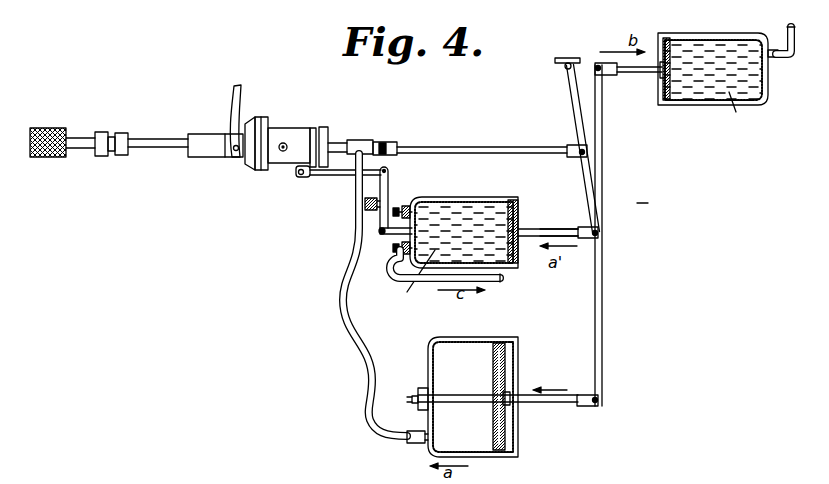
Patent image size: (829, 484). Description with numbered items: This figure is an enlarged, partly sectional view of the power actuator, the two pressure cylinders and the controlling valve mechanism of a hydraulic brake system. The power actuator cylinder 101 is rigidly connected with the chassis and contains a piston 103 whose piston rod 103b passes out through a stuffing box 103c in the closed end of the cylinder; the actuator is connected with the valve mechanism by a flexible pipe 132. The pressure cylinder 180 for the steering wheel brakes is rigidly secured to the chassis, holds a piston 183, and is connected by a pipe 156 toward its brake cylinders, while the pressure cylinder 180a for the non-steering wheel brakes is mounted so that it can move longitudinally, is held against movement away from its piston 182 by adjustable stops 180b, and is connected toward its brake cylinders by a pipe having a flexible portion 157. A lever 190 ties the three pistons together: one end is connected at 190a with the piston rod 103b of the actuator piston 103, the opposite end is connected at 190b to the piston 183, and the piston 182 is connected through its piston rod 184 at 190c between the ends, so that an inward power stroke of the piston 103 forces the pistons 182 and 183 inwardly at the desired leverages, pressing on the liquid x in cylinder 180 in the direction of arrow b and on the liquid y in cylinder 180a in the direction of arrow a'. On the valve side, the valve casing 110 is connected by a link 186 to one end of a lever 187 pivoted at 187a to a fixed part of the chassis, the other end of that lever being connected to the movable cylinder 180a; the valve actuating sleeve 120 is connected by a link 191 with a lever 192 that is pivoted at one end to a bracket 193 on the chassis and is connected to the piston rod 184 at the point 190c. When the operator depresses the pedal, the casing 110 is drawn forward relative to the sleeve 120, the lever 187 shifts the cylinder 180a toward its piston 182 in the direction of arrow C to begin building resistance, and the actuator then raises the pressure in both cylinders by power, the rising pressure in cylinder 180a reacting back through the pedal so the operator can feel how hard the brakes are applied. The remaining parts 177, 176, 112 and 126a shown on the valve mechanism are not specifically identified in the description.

The hand knob 177 is at (81, 151).
The shaft coupling 176 is at (155, 152).
The valve casing 110 is at (243, 158).
The port 112 is at (283, 152).
The operating lever 126a is at (242, 90).
The valve actuating sleeve 120 is at (357, 138).
The link 186 is at (318, 173).
The lever 187 is at (391, 181).
The pivot 187a is at (392, 212).
The adjustable stops 180b is at (392, 248).
The pressure cylinder for the non-steering wheel brake mechanisms 180a is at (481, 201).
The piston 182 is at (516, 219).
The piston rod 184 is at (562, 231).
The connection point 190c is at (600, 234).
The lever 190 is at (603, 293).
The connection point 190b is at (598, 64).
The bracket or support 193 is at (566, 68).
The lever 192 is at (574, 106).
The link 191 is at (503, 147).
The pressure cylinder for the steering wheel brake mechanisms 180 is at (706, 34).
The pipe 156 is at (788, 26).
The piston 183 is at (664, 85).
The flexible pipe 157 is at (500, 282).
The flexible pipe 132 is at (356, 348).
The stuffing box 103c is at (425, 386).
The piston rod 103b is at (475, 396).
The piston 103 is at (506, 433).
The power actuator cylinder 101 is at (491, 453).
The connection point 190a is at (601, 400).